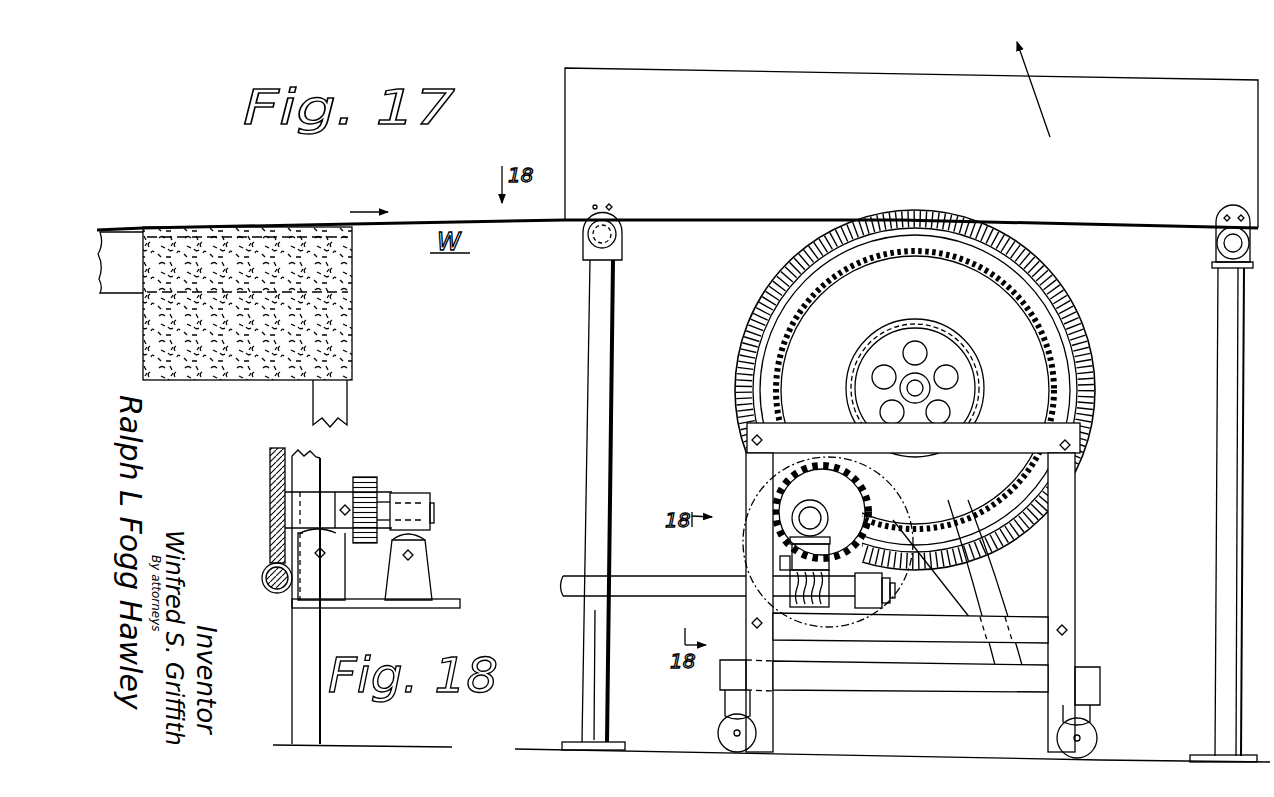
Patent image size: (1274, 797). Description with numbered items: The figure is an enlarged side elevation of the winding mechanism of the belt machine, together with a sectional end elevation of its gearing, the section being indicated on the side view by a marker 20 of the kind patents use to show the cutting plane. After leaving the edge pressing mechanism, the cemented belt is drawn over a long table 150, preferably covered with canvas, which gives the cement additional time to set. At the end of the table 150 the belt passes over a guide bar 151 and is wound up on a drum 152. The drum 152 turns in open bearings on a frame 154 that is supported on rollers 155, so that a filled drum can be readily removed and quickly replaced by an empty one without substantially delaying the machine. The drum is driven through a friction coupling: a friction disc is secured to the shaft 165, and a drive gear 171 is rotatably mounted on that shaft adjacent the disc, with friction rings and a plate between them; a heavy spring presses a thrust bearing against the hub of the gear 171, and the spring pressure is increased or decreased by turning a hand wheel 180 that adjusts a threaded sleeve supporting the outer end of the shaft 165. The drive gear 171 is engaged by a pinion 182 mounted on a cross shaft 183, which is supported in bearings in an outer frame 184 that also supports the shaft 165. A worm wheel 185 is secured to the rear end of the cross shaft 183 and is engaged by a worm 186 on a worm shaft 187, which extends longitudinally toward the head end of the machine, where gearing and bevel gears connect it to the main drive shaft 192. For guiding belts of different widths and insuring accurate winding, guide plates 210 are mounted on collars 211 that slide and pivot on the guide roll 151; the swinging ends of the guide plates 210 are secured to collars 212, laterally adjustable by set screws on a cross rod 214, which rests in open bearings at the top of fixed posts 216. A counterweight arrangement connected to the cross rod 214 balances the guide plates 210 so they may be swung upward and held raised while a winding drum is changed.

In FIG. 17, the hub / spokes 20 is at (874, 388).
In FIG. 17, the table 150 is at (152, 224).
In FIG. 17, the guide bar 151 is at (590, 240).
In FIG. 17, the drum 152 is at (770, 300).
In FIG. 17, the frame 154 is at (995, 722).
In FIG. 17, the rollers 155 is at (720, 733).
In FIG. 17, the shaft 165 is at (930, 392).
In FIG. 17, the drive gear 171 is at (878, 270).
In FIG. 17, the hand wheel 180 is at (958, 377).
In FIG. 17, the pinion 182 is at (836, 508).
In FIG. 18, the pinion 182 is at (392, 473).
In FIG. 17, the cross shaft 183 is at (806, 521).
In FIG. 18, the cross shaft 183 is at (488, 530).
In FIG. 17, the outer frame 184 is at (1122, 555).
In FIG. 17, the worm wheel 185 is at (775, 478).
In FIG. 18, the worm wheel 185 is at (270, 460).
In FIG. 17, the worm 186 is at (832, 606).
In FIG. 18, the worm 186 is at (266, 573).
In FIG. 17, the worm shaft 187 is at (620, 585).
In FIG. 18, the worm shaft 187 is at (290, 625).
In FIG. 17, the main drive shaft 192 is at (830, 500).
In FIG. 17, the guide plates 210 is at (911, 135).
In FIG. 17, the collars 211 is at (620, 218).
In FIG. 17, the collars 212 is at (1217, 230).
In FIG. 17, the cross rod 214 is at (1222, 247).
In FIG. 17, the fixed posts 216 is at (1218, 515).